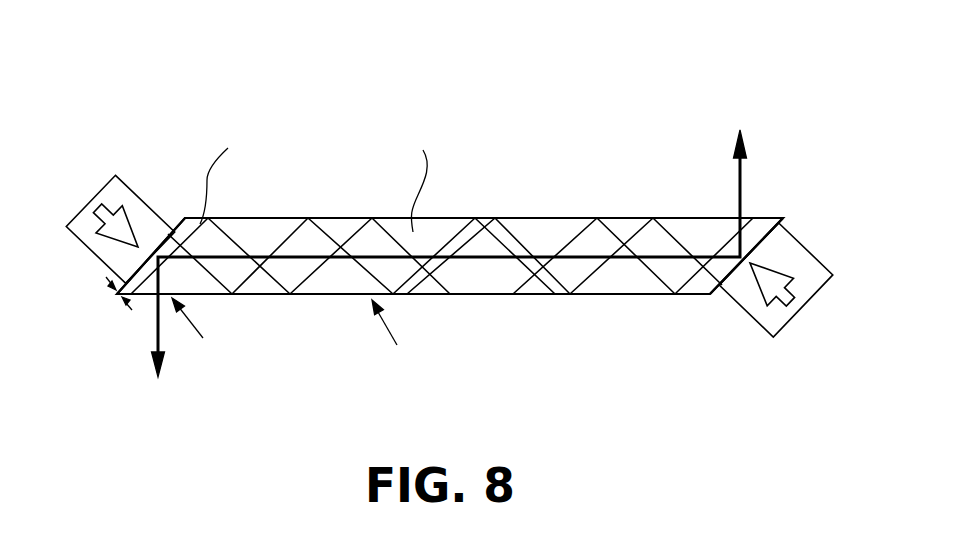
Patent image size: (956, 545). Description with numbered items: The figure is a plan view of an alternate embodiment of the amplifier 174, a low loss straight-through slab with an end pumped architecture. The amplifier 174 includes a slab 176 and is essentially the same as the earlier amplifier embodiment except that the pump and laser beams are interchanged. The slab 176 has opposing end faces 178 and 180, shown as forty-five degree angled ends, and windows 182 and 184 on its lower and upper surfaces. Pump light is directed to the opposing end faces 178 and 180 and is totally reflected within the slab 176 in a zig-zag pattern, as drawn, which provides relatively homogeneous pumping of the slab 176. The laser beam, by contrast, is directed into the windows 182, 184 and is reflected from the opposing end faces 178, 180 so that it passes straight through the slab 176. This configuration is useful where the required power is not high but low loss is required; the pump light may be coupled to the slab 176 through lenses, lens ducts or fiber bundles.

The amplifier 174 is at (670, 110).
The slab 176 is at (480, 220).
The end face 178 is at (178, 226).
The end face 180 is at (783, 222).
The window 182 is at (141, 298).
The window 184 is at (718, 218).